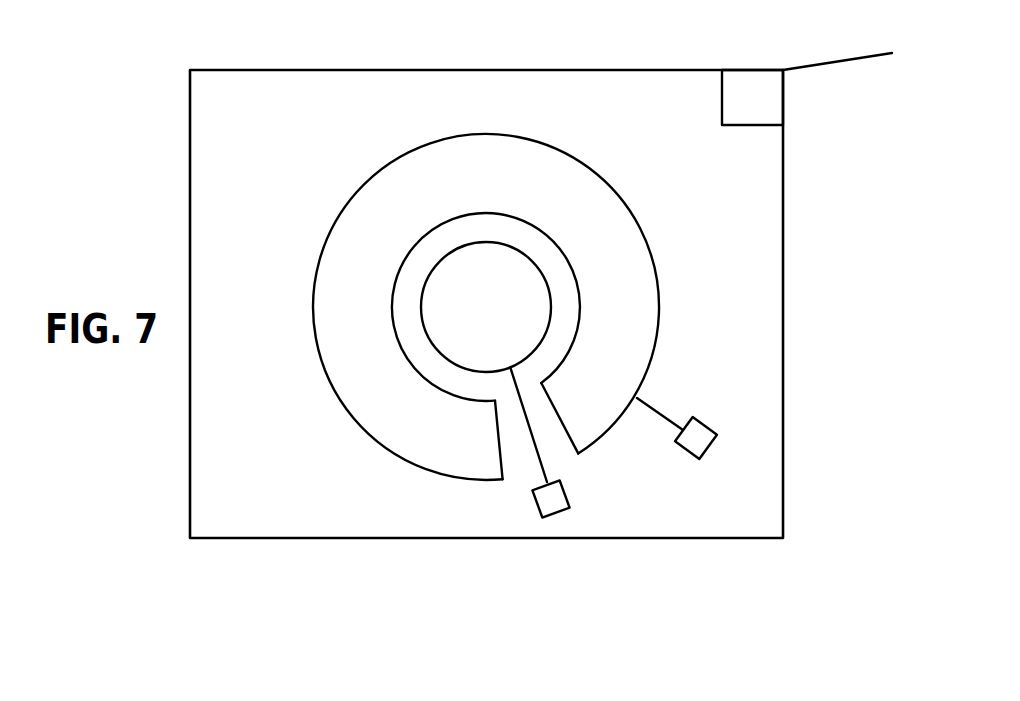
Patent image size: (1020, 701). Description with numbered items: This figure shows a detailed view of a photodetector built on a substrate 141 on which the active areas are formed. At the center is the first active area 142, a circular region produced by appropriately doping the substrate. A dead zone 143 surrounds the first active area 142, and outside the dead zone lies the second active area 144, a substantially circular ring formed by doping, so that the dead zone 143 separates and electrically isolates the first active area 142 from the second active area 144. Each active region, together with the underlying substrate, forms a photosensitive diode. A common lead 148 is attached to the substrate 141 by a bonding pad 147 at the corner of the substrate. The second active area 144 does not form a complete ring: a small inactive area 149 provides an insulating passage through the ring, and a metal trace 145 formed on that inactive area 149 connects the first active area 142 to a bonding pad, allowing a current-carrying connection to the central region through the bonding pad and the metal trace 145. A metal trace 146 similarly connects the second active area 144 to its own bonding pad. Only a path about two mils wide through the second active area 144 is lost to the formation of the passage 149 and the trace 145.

The substrate 141 is at (478, 65).
The first active area 142 is at (543, 276).
The dead zone 143 is at (558, 333).
The second active area 144 is at (428, 143).
The metal trace 145 is at (533, 450).
The metal trace 146 is at (660, 410).
The bonding pad 147 is at (772, 100).
The common lead 148 is at (842, 60).
The inactive area 149 is at (551, 430).